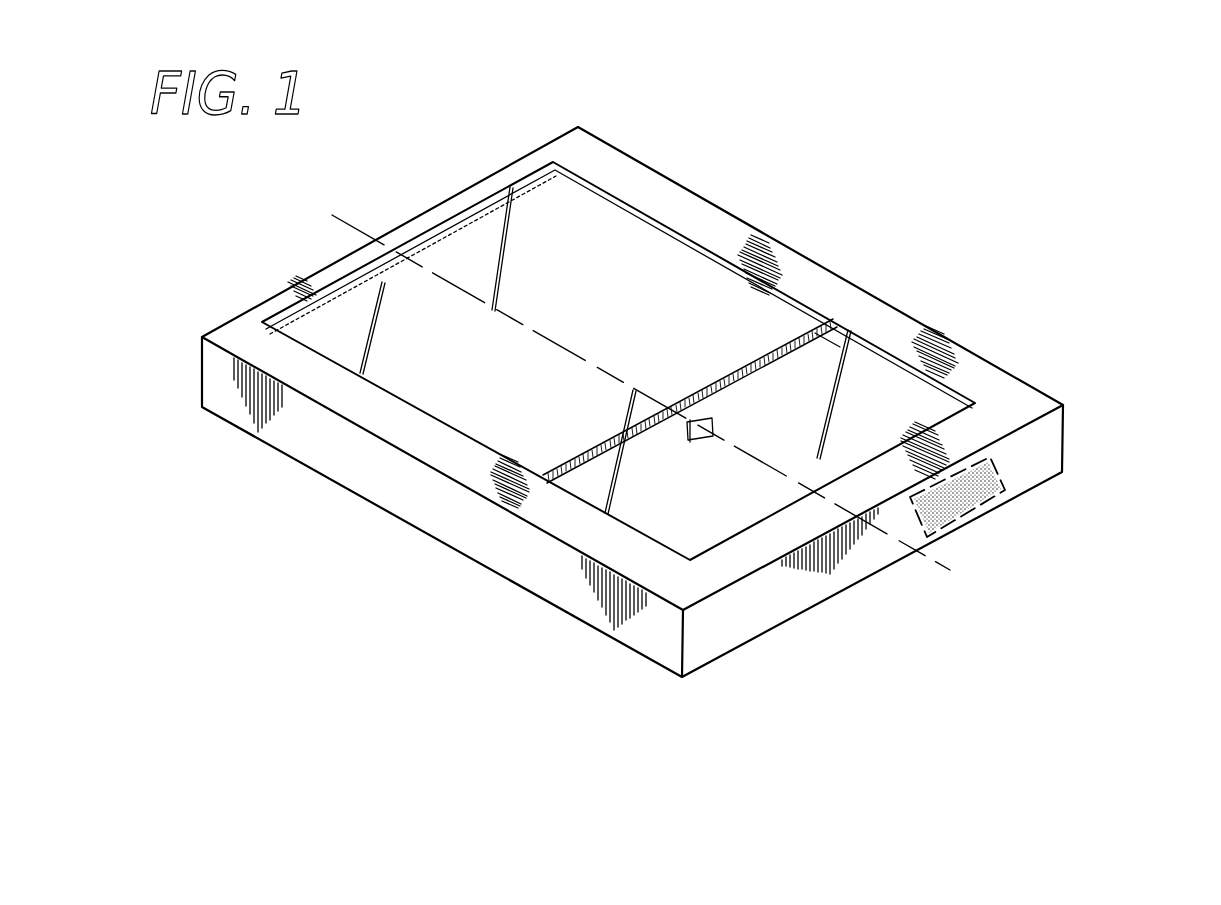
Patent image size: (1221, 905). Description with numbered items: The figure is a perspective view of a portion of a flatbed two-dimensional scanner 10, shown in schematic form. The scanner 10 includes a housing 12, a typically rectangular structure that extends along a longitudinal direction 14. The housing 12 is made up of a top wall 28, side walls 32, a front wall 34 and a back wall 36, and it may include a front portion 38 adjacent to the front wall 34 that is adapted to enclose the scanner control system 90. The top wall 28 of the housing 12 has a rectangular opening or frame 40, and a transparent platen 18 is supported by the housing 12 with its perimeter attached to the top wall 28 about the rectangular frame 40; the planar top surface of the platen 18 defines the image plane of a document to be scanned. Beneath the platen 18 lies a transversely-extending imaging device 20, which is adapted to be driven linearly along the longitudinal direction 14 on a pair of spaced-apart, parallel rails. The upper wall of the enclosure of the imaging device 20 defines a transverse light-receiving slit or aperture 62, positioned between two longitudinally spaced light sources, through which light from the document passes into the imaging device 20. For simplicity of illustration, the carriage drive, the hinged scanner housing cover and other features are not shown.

The flatbed two-dimensional scanner 10 is at (932, 150).
The housing 12 is at (747, 213).
The longitudinal direction 14 is at (937, 557).
The transparent platen 18 is at (617, 257).
The imaging device 20 is at (830, 343).
The top wall 28 is at (408, 445).
The side walls 32 is at (938, 332).
The front wall 34 is at (767, 608).
The back wall 36 is at (342, 257).
The front portion 38 is at (988, 427).
The rectangular frame 40 is at (545, 213).
The light-receiving aperture 62 is at (813, 330).
The scanner control system 90 is at (952, 493).